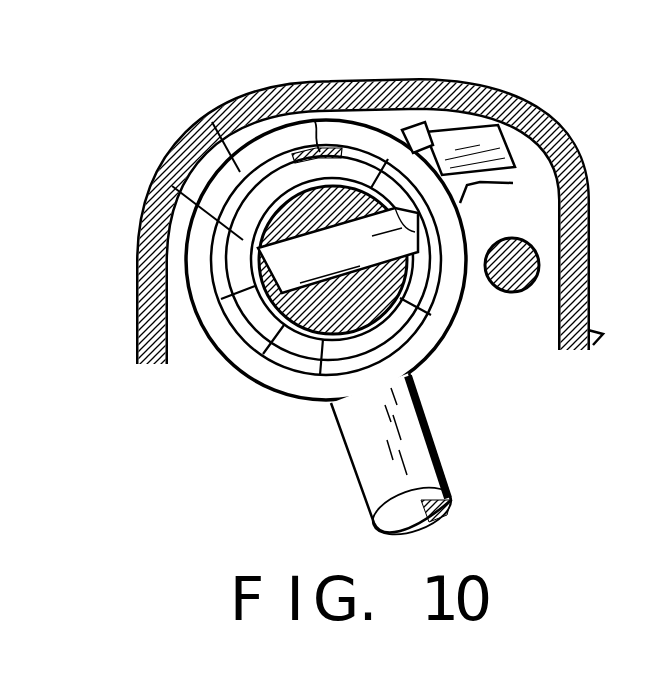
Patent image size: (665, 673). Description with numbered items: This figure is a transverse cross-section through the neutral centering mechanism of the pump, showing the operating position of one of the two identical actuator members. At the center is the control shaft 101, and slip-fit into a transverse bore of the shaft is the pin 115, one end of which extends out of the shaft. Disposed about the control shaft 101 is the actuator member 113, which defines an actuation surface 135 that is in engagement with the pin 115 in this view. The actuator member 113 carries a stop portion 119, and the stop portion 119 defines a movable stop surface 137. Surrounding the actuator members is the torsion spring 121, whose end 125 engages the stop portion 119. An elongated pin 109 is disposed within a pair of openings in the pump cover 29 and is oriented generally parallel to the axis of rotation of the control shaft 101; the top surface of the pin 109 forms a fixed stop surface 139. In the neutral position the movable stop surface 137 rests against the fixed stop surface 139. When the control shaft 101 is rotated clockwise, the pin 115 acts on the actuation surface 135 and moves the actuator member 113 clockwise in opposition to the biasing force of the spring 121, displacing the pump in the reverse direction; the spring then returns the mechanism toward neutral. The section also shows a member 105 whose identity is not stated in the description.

The pump cover 29 is at (394, 118).
The control shaft 101 is at (290, 330).
The handle tube 105 is at (441, 460).
The elongated pin 109 is at (527, 268).
The actuator member 113 is at (172, 186).
The pin 115 is at (258, 285).
The stop portion 119 is at (512, 139).
The torsion spring 121 is at (212, 122).
The spring end 125 is at (428, 137).
The actuation surface 135 is at (338, 260).
The movable stop surface 137 is at (513, 183).
The fixed stop surface 139 is at (513, 238).